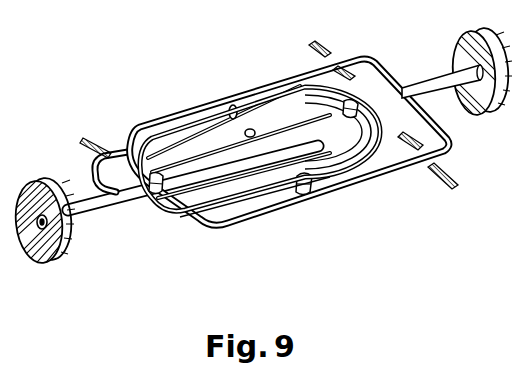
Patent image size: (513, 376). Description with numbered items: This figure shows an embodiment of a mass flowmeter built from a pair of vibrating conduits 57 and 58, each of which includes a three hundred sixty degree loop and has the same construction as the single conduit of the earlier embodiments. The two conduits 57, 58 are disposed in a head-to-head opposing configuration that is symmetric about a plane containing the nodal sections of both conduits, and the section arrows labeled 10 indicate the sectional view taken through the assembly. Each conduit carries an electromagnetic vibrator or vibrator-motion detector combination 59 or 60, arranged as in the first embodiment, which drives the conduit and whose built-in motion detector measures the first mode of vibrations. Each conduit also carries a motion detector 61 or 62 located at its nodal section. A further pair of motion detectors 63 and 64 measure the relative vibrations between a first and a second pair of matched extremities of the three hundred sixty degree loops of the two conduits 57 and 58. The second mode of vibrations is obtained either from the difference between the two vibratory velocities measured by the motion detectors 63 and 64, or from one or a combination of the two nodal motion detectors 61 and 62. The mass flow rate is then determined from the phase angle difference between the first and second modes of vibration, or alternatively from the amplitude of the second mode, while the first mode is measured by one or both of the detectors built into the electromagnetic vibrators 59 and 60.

The section line 10 is at (203, 88).
The vibrating conduit 57 is at (125, 152).
The vibrating conduit 58 is at (233, 222).
The electromagnetic vibrator or vibrator-motion detector combination 59 is at (200, 110).
The electromagnetic vibrator or vibrator-motion detector combination 60 is at (283, 200).
The motion detector 61 is at (291, 131).
The motion detector 62 is at (322, 160).
The motion detector 63 is at (133, 203).
The motion detector 64 is at (355, 101).